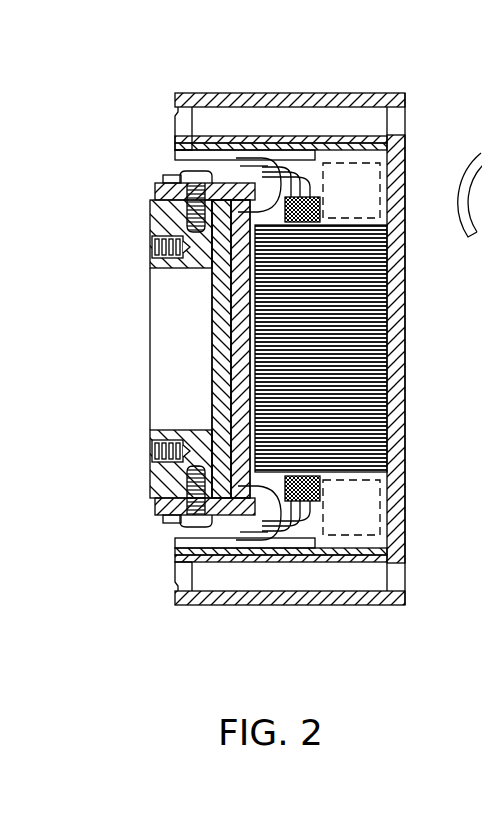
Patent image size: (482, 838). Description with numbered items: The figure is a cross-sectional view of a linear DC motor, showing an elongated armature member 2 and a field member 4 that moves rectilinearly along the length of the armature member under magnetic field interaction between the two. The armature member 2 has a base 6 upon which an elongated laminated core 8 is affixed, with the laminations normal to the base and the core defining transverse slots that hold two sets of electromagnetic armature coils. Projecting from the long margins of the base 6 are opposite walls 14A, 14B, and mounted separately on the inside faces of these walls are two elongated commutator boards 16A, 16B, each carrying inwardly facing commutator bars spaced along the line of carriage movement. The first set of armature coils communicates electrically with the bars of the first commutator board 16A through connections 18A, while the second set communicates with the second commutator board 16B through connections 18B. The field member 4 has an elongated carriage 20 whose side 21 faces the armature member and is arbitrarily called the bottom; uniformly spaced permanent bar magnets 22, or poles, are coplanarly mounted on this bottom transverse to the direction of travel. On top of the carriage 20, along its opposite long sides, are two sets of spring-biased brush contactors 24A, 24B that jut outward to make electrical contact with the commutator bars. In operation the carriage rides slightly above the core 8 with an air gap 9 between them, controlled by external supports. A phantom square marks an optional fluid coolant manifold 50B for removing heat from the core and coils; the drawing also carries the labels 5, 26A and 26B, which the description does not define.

The armature member 2 is at (440, 130).
The field member 4 is at (126, 269).
The ring member 5 is at (367, 204).
The base 6 is at (405, 345).
The elongated laminated core 8 is at (387, 412).
The air gap 9 is at (253, 497).
The wall 14A is at (272, 93).
The wall 14B is at (343, 607).
The commutator board 16A is at (175, 165).
The commutator board 16B is at (172, 545).
The connections 18A is at (320, 198).
The connections 18B is at (290, 500).
The carriage 20 is at (150, 470).
The side 21 is at (268, 152).
The permanent bar magnets 22 is at (240, 323).
The brush contactors 24A is at (175, 163).
The brush contactors 24B is at (172, 530).
The upper bolt plate 26A is at (155, 193).
The lower bolt plate 26B is at (153, 507).
The fluid coolant manifold 50B is at (385, 474).